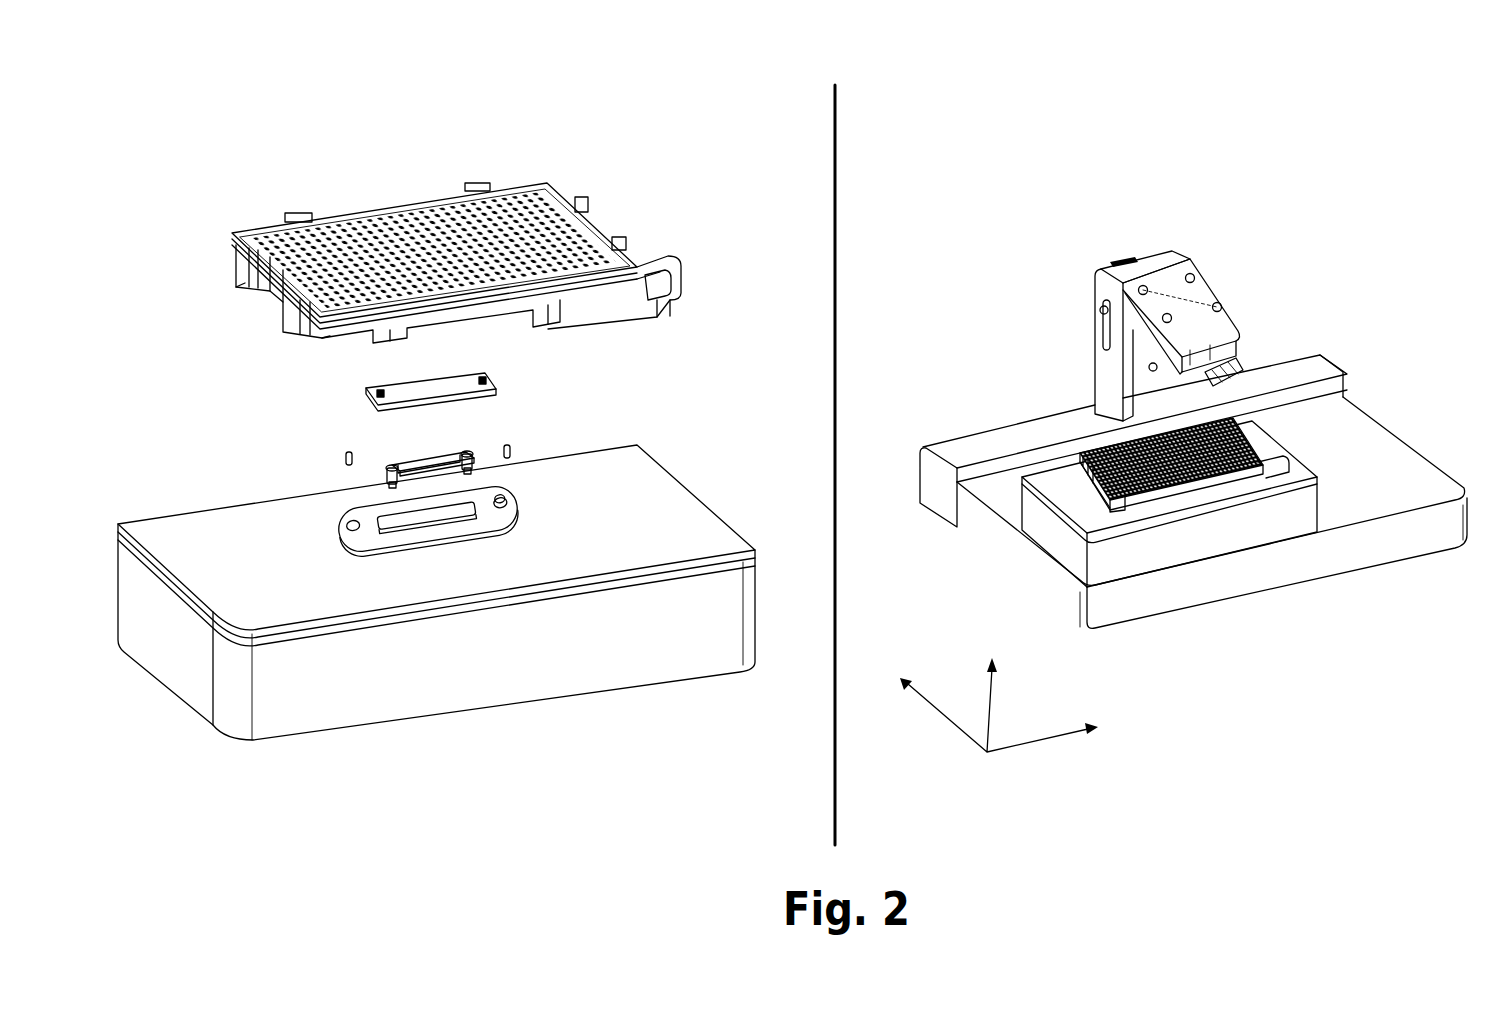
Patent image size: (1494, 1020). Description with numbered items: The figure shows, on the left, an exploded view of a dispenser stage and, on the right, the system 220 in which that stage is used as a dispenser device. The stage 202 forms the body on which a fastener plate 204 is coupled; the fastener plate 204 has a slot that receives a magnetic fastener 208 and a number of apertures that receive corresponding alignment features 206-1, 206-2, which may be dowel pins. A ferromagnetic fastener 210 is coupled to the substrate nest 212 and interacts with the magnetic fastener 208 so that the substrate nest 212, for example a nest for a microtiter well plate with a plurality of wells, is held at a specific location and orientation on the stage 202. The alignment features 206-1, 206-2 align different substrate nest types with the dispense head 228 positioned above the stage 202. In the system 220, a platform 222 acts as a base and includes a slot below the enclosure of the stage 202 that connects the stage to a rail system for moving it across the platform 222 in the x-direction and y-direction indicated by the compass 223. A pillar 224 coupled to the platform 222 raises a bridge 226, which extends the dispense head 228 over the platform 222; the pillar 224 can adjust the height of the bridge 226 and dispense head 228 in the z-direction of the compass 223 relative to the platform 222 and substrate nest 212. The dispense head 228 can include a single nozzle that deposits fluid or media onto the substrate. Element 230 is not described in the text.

The stage 202 is at (735, 553).
The fastener plate 204 is at (476, 521).
The alignment feature 206-1 is at (513, 452).
The alignment feature 206-2 is at (344, 459).
The magnetic fastener 208 is at (446, 452).
The ferromagnetic fastener 210 is at (490, 377).
The substrate nest 212 is at (328, 335).
The system 220 is at (1266, 136).
The platform 222 is at (1367, 440).
The compass 223 is at (945, 748).
The pillar 224 is at (1093, 370).
The bridge 226 is at (1226, 318).
The dispense head 228 is at (1245, 372).
The container body 230 is at (148, 660).